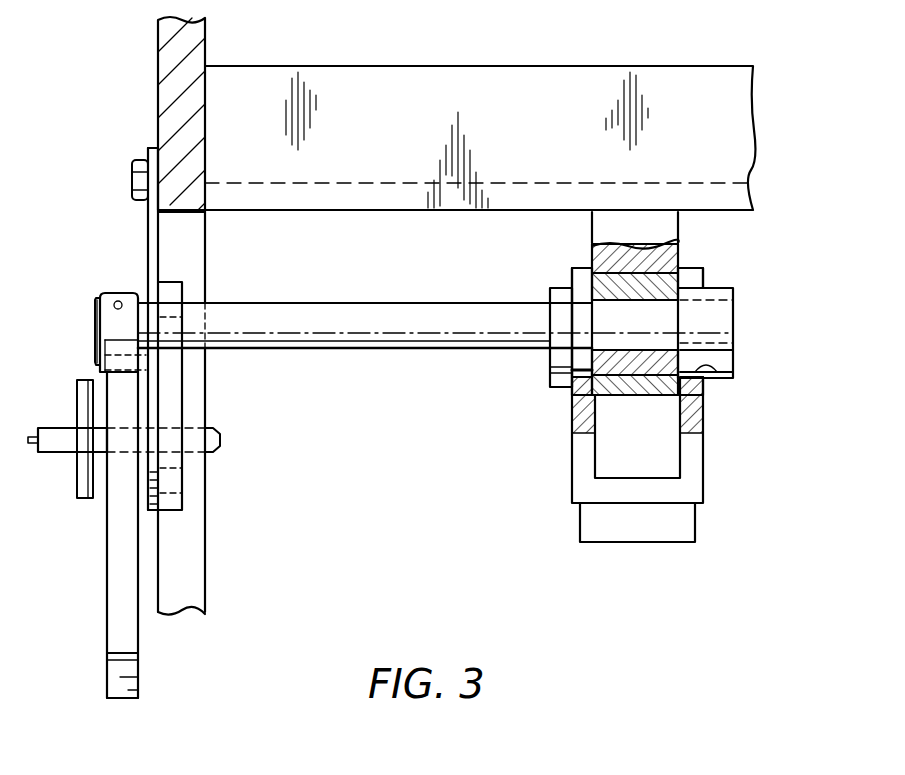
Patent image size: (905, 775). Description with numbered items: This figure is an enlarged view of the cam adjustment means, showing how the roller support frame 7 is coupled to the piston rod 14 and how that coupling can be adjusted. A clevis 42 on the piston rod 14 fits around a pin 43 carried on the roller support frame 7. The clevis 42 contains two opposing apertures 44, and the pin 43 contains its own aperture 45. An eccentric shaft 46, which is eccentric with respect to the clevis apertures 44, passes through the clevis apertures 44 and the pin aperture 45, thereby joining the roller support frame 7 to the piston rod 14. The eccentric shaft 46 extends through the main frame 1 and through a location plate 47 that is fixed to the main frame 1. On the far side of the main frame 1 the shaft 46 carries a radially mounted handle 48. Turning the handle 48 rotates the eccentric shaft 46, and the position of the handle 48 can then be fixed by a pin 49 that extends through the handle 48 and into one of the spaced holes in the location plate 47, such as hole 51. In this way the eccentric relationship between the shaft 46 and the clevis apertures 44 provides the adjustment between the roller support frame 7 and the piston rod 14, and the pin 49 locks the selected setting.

The main frame 1 is at (166, 118).
The roller support frame 7 is at (403, 100).
The piston rod 14 is at (670, 525).
The clevis 42 is at (688, 467).
The pin 43 is at (662, 232).
The clevis apertures 44 is at (582, 297).
The pin aperture 45 is at (607, 262).
The eccentric shaft 46 is at (326, 318).
The location plate 47 is at (153, 243).
The handle 48 is at (123, 562).
The pin 49 is at (58, 430).
The spaced hole 51 is at (157, 426).